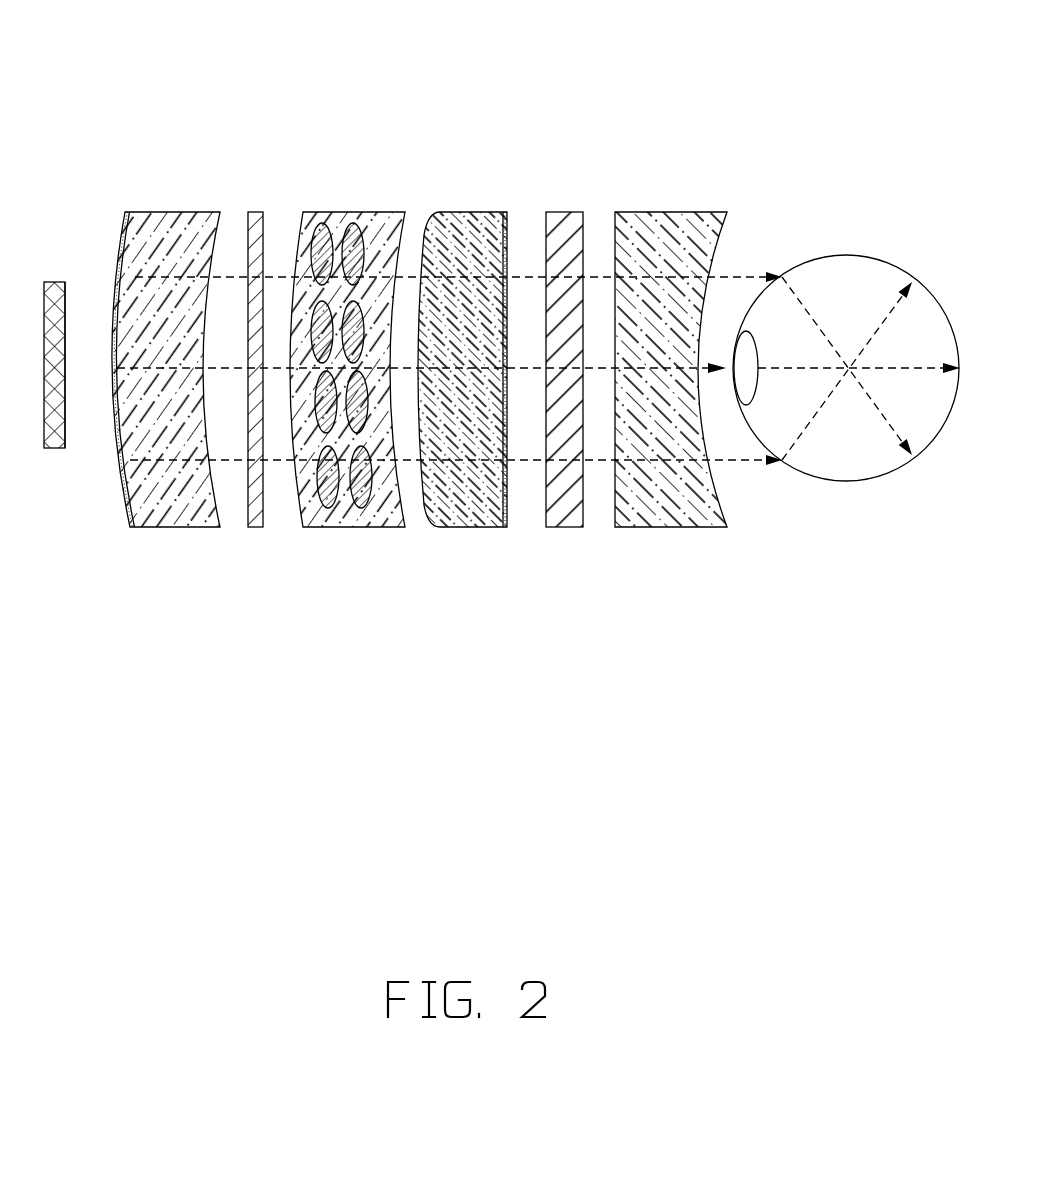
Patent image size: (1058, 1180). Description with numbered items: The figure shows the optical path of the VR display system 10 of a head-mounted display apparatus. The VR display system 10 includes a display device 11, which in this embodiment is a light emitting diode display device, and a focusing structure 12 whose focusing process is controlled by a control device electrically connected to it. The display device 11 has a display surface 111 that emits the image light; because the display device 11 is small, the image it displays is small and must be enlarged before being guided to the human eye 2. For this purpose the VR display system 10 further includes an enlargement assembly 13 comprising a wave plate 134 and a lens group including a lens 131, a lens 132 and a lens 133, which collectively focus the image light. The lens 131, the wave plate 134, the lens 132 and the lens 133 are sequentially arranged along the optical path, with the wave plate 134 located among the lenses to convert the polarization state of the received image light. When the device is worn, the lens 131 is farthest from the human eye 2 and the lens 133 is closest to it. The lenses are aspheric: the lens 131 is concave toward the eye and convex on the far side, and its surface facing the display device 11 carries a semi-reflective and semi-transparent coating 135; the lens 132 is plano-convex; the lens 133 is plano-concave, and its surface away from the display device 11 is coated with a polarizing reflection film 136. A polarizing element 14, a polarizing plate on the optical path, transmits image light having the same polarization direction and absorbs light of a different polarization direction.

The VR display system 10 is at (475, 33).
The display device 11 is at (54, 446).
The display surface 111 is at (70, 368).
The focusing structure 12 is at (347, 517).
The enlargement assembly 13 is at (228, 157).
The lens 131 is at (173, 228).
The lens 132 is at (475, 225).
The lens 133 is at (655, 225).
The wave plate 134 is at (263, 222).
The semi-reflective and semi-transparent coating 135 is at (118, 478).
The polarizing reflection film 136 is at (505, 480).
The polarizing element 14 is at (568, 493).
The human eye 2 is at (875, 478).